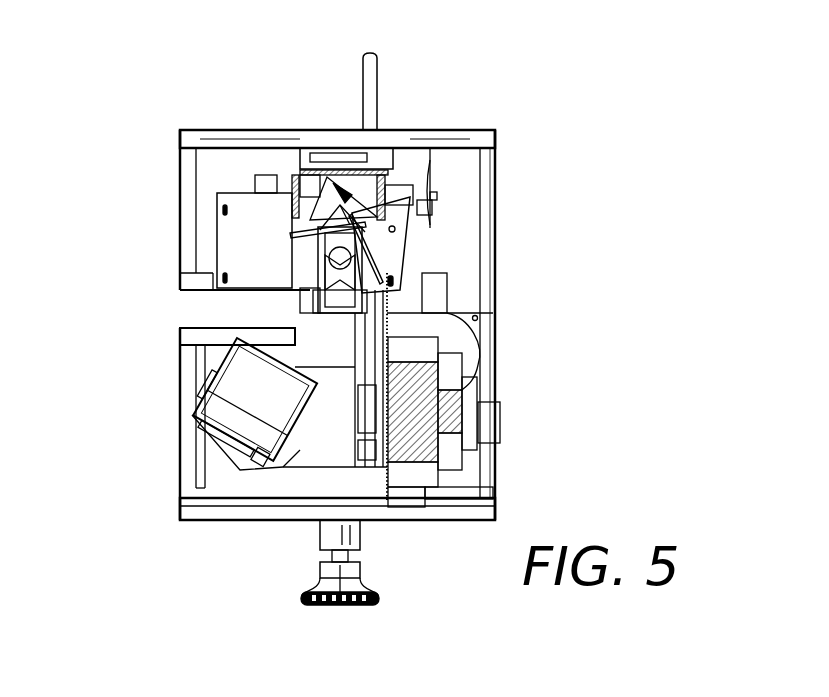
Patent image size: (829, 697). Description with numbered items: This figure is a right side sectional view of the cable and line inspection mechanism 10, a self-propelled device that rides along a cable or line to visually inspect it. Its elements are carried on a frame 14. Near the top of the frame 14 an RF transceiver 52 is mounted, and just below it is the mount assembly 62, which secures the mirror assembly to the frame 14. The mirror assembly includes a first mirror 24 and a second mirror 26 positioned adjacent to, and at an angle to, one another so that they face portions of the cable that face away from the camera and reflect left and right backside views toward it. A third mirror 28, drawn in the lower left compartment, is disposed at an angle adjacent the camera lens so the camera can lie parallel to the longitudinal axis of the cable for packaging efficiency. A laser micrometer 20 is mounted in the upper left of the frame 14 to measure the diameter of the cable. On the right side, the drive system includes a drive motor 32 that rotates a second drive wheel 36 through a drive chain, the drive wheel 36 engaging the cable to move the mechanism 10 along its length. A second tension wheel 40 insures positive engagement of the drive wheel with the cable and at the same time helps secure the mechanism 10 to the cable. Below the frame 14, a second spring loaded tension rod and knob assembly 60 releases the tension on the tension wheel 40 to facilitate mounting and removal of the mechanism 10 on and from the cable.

The cable and line inspection mechanism 10 is at (641, 214).
The frame 14 is at (180, 513).
The laser micrometer 20 is at (223, 227).
The first mirror 24 is at (295, 230).
The second mirror 26 is at (378, 268).
The third mirror 28 is at (236, 366).
The drive motor 32 is at (450, 416).
The second drive wheel 36 is at (383, 232).
The second tension wheel 40 is at (387, 327).
The RF transceiver 52 is at (325, 148).
The second spring loaded tension rod and knob assembly 60 is at (327, 602).
The mount assembly 62 is at (390, 192).